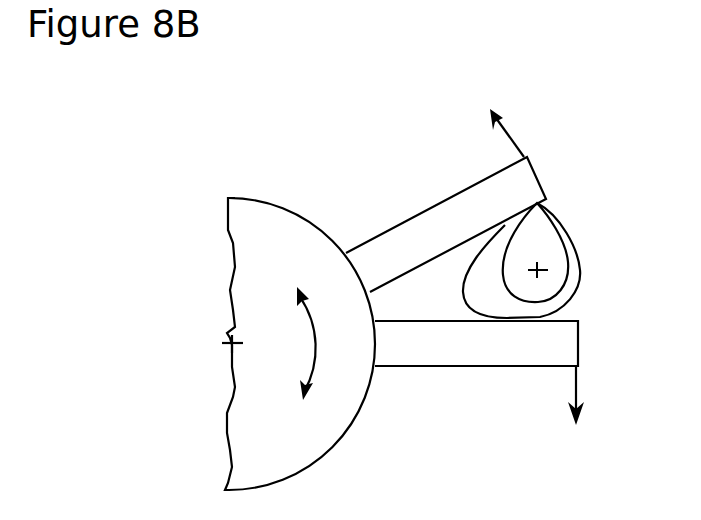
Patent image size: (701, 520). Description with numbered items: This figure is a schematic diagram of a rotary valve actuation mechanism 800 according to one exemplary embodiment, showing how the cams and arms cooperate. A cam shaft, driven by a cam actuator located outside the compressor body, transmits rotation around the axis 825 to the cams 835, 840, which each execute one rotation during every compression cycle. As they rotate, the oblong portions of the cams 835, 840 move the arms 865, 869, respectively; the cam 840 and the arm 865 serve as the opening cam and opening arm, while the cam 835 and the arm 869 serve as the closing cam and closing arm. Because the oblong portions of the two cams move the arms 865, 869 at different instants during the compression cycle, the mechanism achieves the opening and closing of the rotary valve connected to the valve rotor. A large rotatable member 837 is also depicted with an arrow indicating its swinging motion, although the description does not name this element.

The rotary valve actuation mechanism 800 is at (328, 91).
The rotatable lens element 837 is at (248, 261).
The opening arm 865 is at (447, 198).
The closing arm 869 is at (560, 350).
The opening cam 840 is at (545, 221).
The axis 825 is at (540, 268).
The closing cam 835 is at (575, 275).